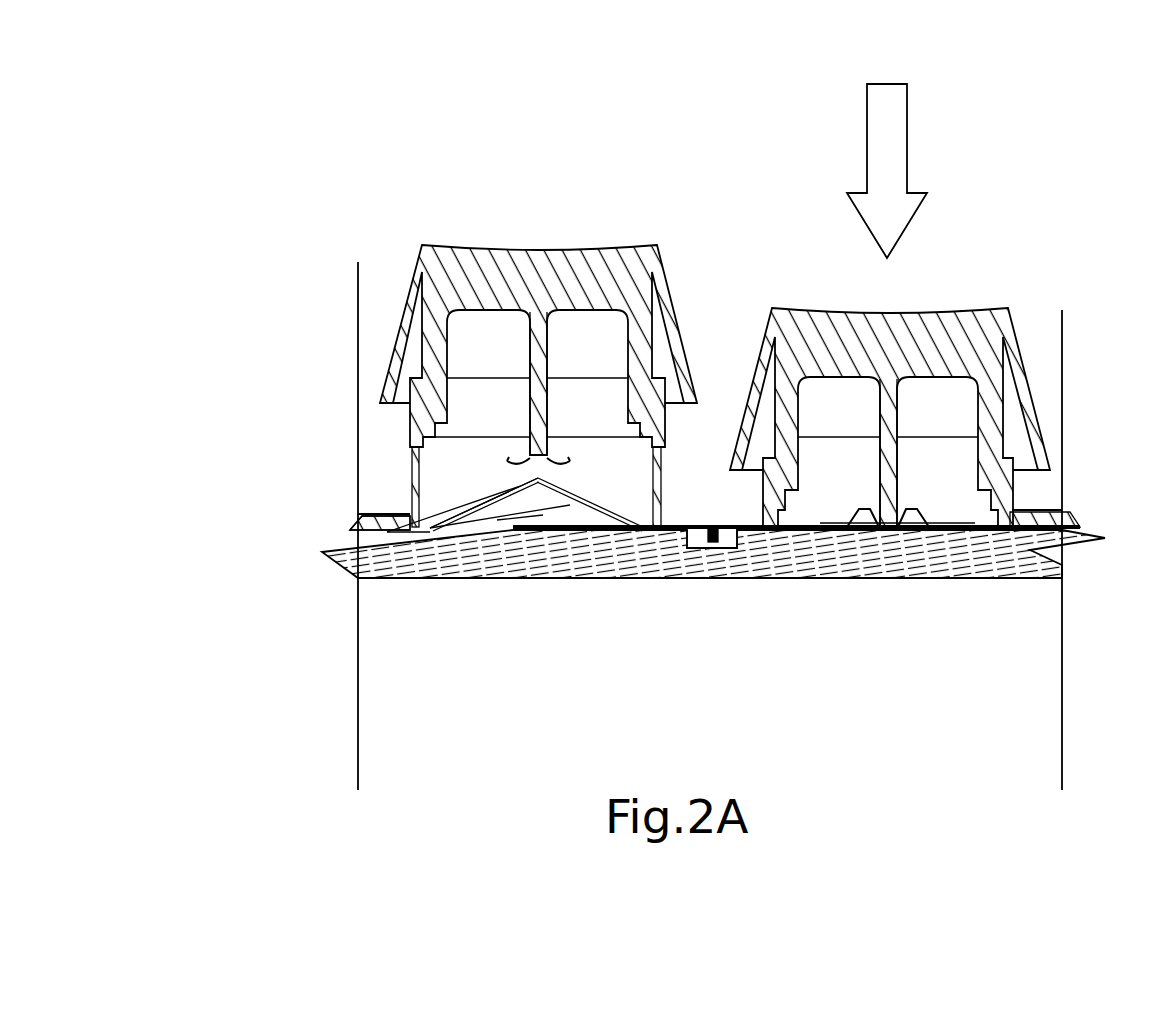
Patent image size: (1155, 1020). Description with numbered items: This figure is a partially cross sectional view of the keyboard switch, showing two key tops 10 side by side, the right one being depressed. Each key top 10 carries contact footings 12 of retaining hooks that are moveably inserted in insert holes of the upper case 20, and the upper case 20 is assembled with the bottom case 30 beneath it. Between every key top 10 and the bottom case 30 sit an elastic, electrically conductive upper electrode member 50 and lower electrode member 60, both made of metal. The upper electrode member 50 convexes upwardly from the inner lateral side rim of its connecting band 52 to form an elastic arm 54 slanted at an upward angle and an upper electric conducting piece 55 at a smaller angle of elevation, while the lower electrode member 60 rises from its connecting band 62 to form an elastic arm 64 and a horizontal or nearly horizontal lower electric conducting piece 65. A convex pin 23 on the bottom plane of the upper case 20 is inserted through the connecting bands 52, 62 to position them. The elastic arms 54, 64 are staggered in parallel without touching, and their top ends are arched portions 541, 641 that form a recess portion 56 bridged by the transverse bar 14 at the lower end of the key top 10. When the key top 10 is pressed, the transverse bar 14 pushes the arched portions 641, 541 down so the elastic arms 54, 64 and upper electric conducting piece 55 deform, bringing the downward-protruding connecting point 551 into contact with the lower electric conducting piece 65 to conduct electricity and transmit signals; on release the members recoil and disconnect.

The key top 10 is at (1045, 312).
The contact footing 12 is at (420, 400).
The transverse bar 14 is at (532, 440).
The upper case 20 is at (392, 535).
The convex pin 23 is at (697, 549).
The bottom case 30 is at (765, 550).
The upper electrode member 50 is at (355, 572).
The connecting band 52 is at (363, 517).
The elastic arm 54 is at (490, 518).
The upper electric conducting piece 55 is at (547, 528).
The recess portion 56 is at (400, 535).
The lower electrode member 60 is at (610, 533).
The connecting band 62 is at (678, 526).
The elastic arm 64 is at (568, 530).
The lower electric conducting piece 65 is at (557, 530).
The arched portion 541 is at (562, 458).
The connecting point 551 is at (527, 525).
The arched portion 641 is at (509, 461).